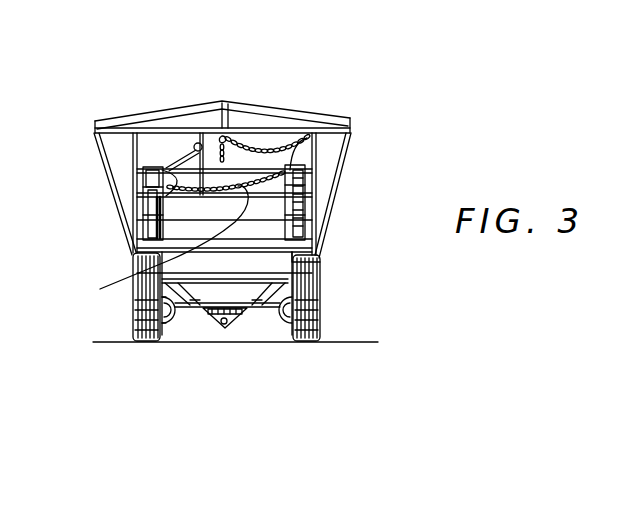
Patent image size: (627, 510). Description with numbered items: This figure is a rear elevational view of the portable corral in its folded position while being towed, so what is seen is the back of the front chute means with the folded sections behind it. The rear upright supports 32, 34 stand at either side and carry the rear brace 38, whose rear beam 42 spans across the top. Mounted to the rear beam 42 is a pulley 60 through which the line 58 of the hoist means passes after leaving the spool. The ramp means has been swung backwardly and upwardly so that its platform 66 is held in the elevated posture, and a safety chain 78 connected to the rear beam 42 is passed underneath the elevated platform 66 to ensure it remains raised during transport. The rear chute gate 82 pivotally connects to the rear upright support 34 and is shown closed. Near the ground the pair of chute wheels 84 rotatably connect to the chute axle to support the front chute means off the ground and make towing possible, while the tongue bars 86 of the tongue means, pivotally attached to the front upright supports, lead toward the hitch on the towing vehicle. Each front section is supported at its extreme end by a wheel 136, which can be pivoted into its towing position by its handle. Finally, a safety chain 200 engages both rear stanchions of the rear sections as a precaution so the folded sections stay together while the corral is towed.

The rear upright support 32 is at (132, 178).
The rear upright support 34 is at (318, 171).
The rear brace 38 is at (278, 104).
The rear beam 42 is at (178, 130).
The line 58 is at (153, 180).
The pulley 60 is at (194, 144).
The platform 66 is at (292, 128).
The safety chain 78 is at (312, 228).
The rear chute gate 82 is at (295, 266).
The chute wheels 84 is at (268, 306).
The tongue bars 86 is at (268, 293).
The wheel 136 is at (140, 343).
The safety chain 200 is at (168, 248).